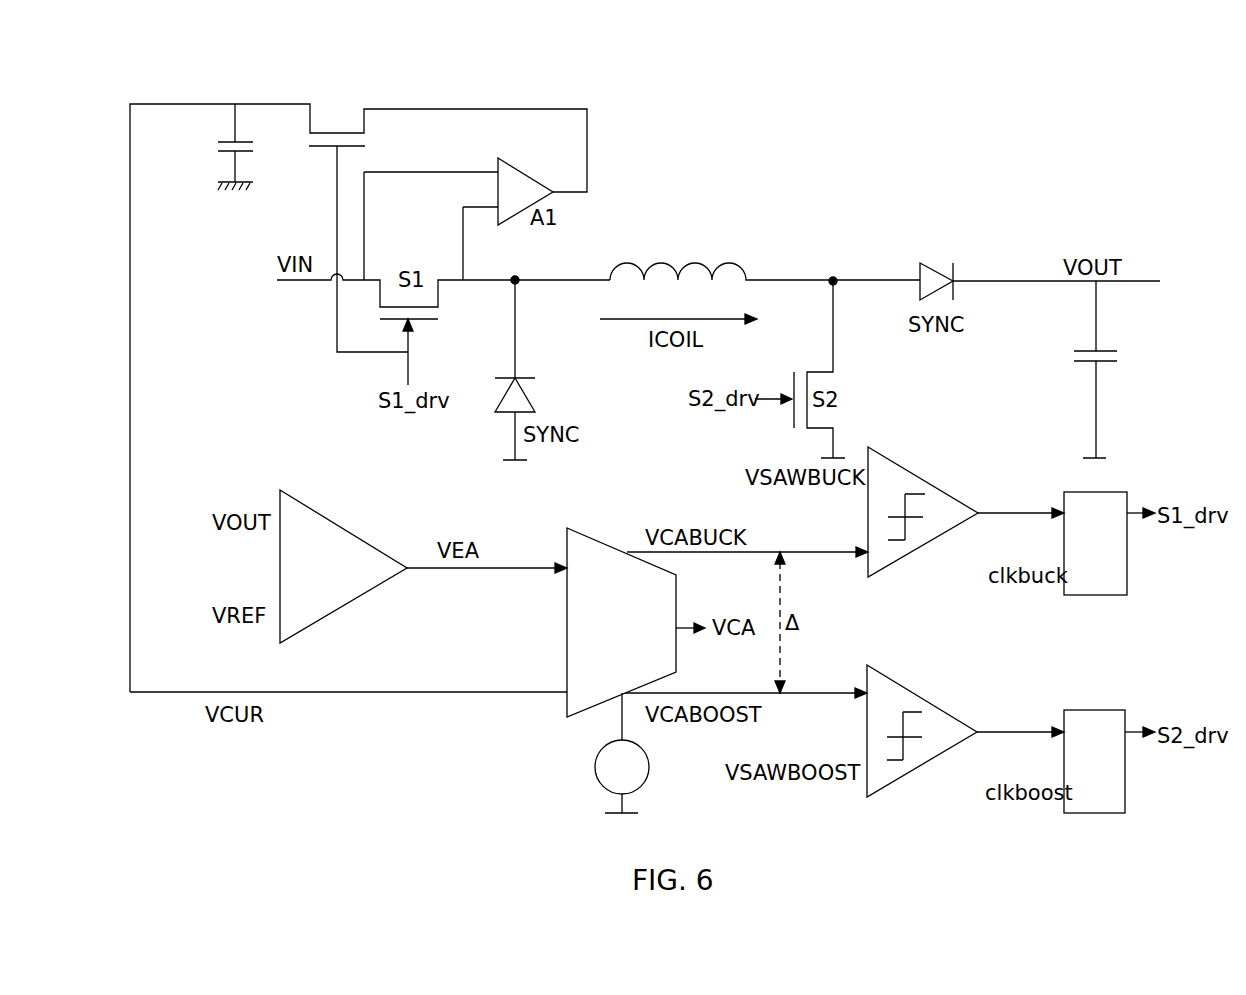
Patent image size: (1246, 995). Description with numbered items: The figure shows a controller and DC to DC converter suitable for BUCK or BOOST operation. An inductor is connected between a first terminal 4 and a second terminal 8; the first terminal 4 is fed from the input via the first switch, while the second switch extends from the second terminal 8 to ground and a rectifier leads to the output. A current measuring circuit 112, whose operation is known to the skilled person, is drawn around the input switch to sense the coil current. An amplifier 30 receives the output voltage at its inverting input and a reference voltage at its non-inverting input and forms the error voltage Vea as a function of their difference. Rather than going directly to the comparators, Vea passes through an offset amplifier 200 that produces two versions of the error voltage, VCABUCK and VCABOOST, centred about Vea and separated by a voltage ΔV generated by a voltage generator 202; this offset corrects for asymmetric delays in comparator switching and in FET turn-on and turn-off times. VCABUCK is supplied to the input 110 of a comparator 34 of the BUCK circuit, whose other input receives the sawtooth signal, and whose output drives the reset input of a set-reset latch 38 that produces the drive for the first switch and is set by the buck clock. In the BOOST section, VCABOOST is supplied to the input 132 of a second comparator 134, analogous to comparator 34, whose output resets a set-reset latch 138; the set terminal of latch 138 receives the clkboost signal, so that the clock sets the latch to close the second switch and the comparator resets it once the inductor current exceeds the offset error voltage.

The current measuring circuit 112 is at (364, 88).
The first terminal of inductor 4 is at (515, 275).
The second terminal of inductor 8 is at (833, 277).
The amplifier 30 is at (350, 606).
The comparator 34 is at (913, 476).
The input of comparator 110 is at (866, 566).
The set-reset latch 38 is at (1127, 578).
The second comparator 134 is at (922, 697).
The input of second comparator 132 is at (862, 708).
The set-reset latch 138 is at (1125, 798).
The offset amplifier 200 is at (567, 636).
The voltage generator 202 is at (596, 767).